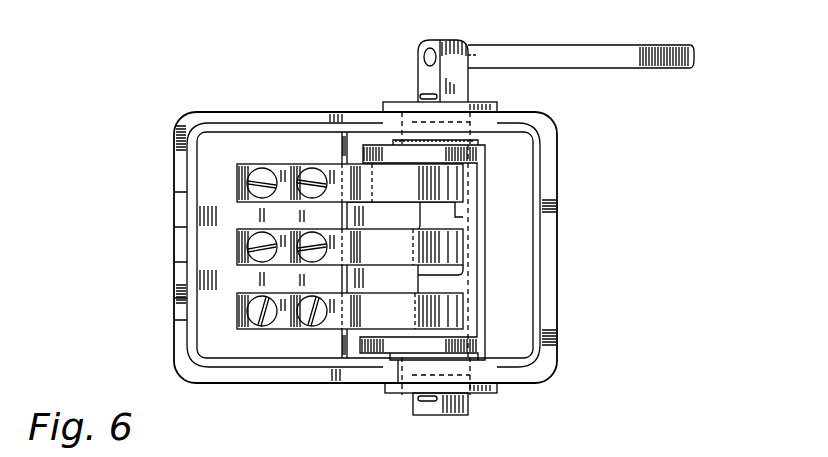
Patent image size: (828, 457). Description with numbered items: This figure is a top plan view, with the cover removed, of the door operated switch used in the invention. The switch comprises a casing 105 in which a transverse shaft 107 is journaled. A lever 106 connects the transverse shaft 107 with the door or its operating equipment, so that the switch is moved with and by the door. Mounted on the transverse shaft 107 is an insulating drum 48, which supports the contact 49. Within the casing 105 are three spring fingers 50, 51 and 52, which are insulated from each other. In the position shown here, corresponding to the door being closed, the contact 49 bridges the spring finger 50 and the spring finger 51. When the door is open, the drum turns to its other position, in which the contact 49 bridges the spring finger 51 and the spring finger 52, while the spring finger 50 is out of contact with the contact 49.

The insulating drum 48 is at (490, 240).
The contact 49 is at (457, 217).
The spring finger 50 is at (350, 183).
The spring finger 51 is at (350, 247).
The spring finger 52 is at (350, 311).
The casing 105 is at (566, 302).
The lever 106 is at (614, 52).
The transverse shaft 107 is at (458, 410).